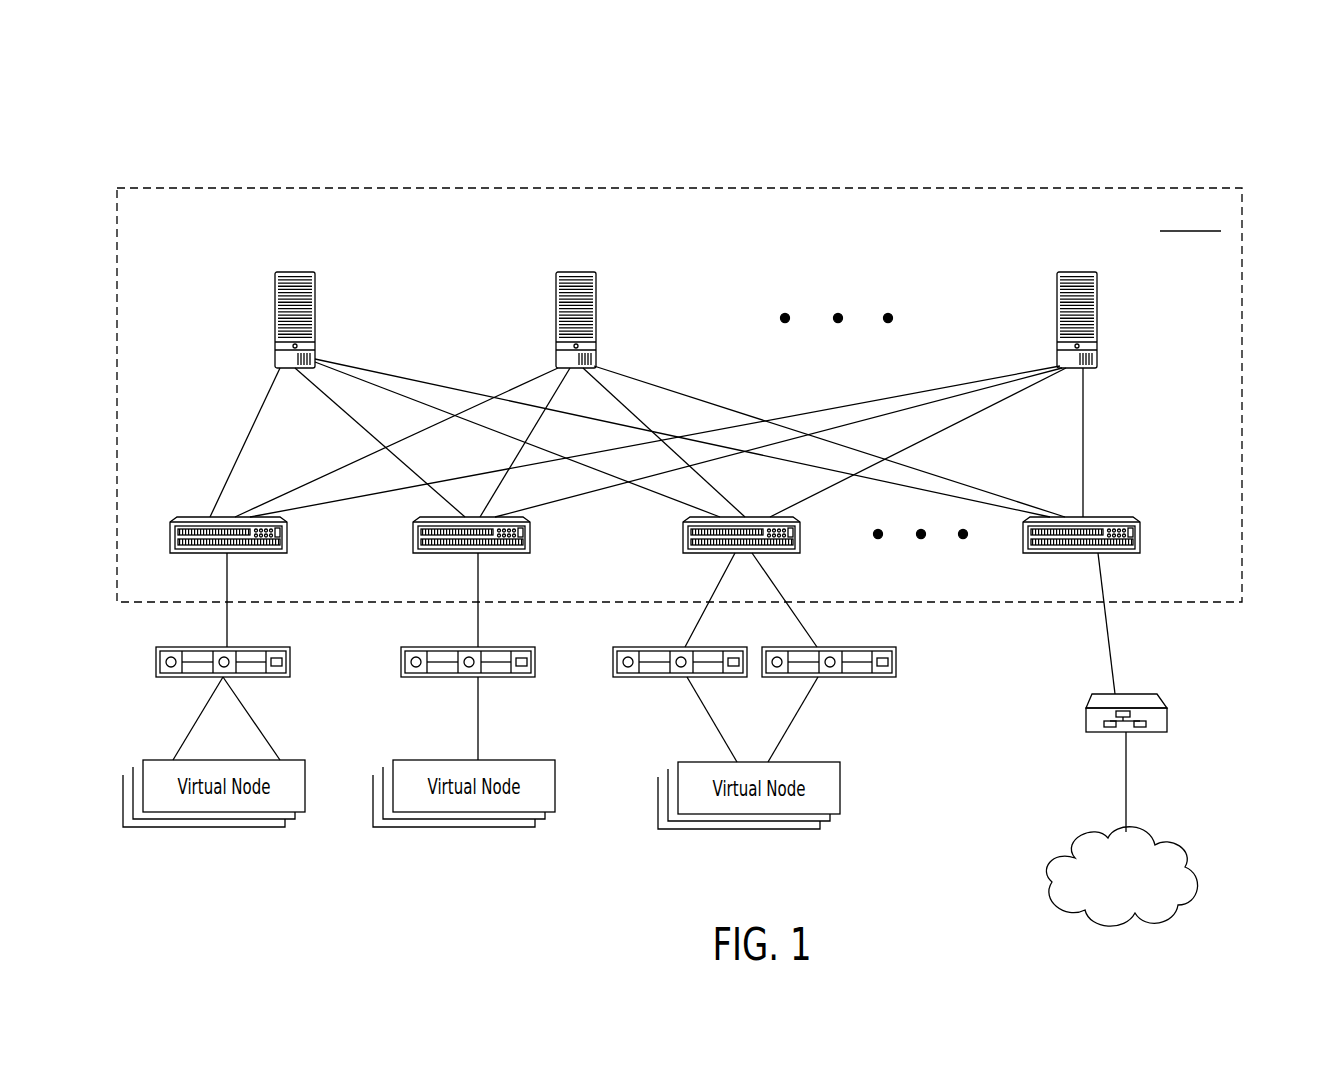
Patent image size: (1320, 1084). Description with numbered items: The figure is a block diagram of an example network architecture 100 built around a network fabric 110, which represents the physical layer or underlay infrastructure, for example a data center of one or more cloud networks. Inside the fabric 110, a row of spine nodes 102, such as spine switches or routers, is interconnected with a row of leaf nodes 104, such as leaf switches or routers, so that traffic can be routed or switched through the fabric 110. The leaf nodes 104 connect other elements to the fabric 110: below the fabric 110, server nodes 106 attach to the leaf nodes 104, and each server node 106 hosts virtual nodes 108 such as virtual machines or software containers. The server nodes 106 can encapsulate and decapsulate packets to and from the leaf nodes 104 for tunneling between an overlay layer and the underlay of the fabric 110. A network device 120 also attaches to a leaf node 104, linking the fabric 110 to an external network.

The network architecture 100 is at (1240, 114).
The spine nodes 102 is at (275, 311).
The leaf nodes 104 is at (287, 535).
The server nodes 106 is at (156, 657).
The virtual nodes 108 is at (305, 778).
The network fabric 110 is at (1224, 215).
The network device 120 is at (1086, 716).